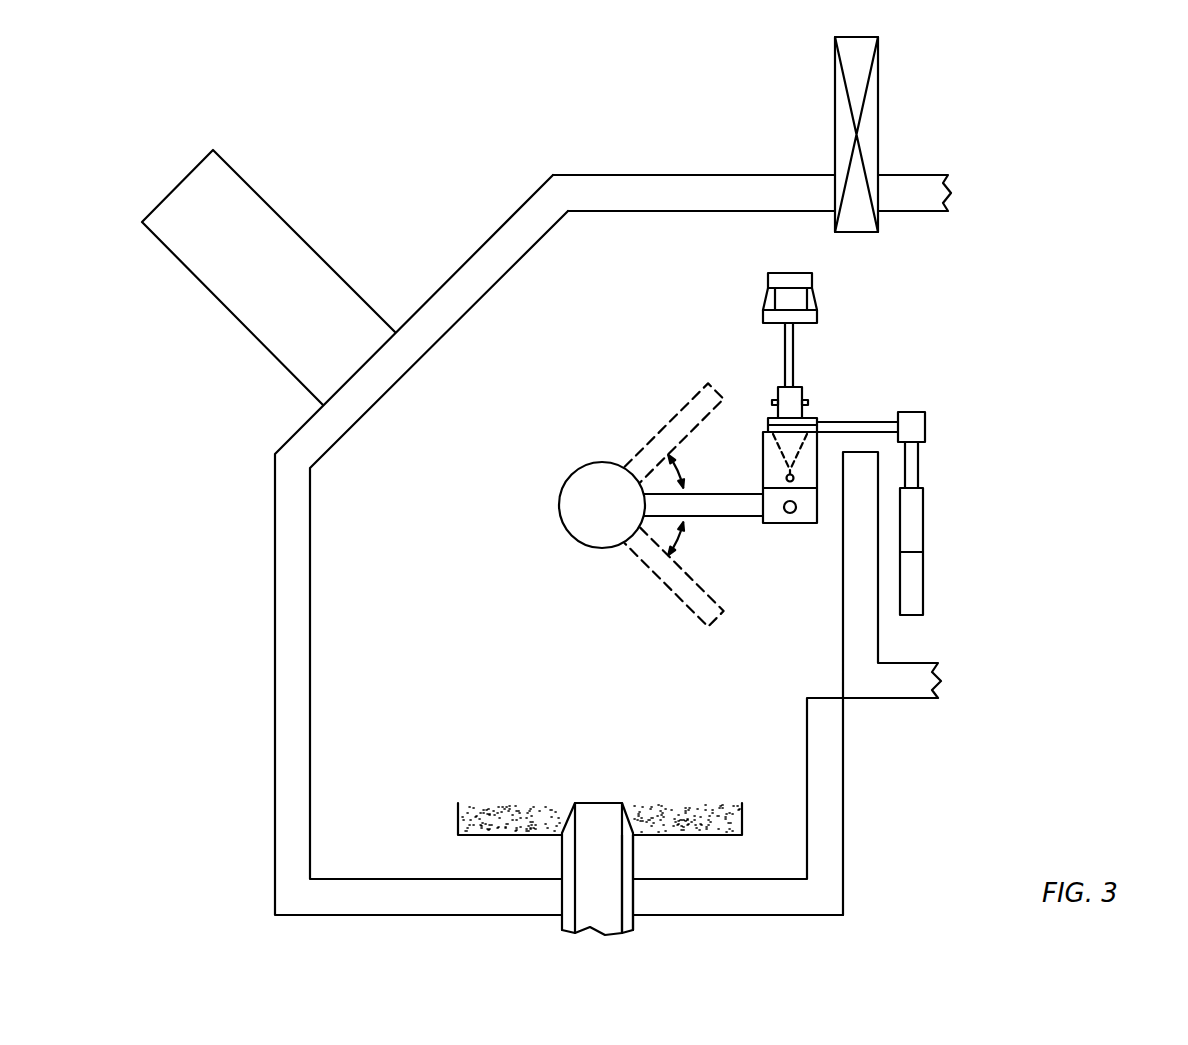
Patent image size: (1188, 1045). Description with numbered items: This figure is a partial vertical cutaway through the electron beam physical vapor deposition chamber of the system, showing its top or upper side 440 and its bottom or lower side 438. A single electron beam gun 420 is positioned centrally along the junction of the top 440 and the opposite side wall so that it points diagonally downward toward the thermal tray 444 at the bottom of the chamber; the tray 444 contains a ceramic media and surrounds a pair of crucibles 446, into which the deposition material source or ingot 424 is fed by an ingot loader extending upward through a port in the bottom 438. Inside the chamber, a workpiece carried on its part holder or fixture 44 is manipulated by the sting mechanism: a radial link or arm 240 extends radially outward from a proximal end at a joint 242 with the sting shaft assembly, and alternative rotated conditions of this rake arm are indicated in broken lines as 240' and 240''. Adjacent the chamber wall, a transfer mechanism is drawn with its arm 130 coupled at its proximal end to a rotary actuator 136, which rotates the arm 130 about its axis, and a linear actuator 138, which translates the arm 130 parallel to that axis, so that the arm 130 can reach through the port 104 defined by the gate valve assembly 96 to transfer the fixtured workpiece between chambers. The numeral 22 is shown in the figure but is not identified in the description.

The gate valve assembly 96 is at (895, 64).
The port 104 is at (874, 387).
The dispenser head 22 is at (795, 299).
The part holder (fixture) 44 is at (800, 358).
The arm 130 is at (863, 414).
The linear actuator 138 is at (912, 537).
The rotary actuator 136 is at (913, 588).
The radial link or arm 240 is at (711, 544).
The arm in raised position 240' is at (661, 413).
The arm in lowered position 240'' is at (664, 594).
The joint 242 is at (596, 519).
The electron beam gun 420 is at (212, 320).
The top or upper side 440 is at (682, 220).
The bottom or lower side 438 is at (772, 866).
The deposition material source (ingot) 424 is at (598, 825).
The thermal tray 444 is at (687, 806).
The crucible 446 is at (627, 858).